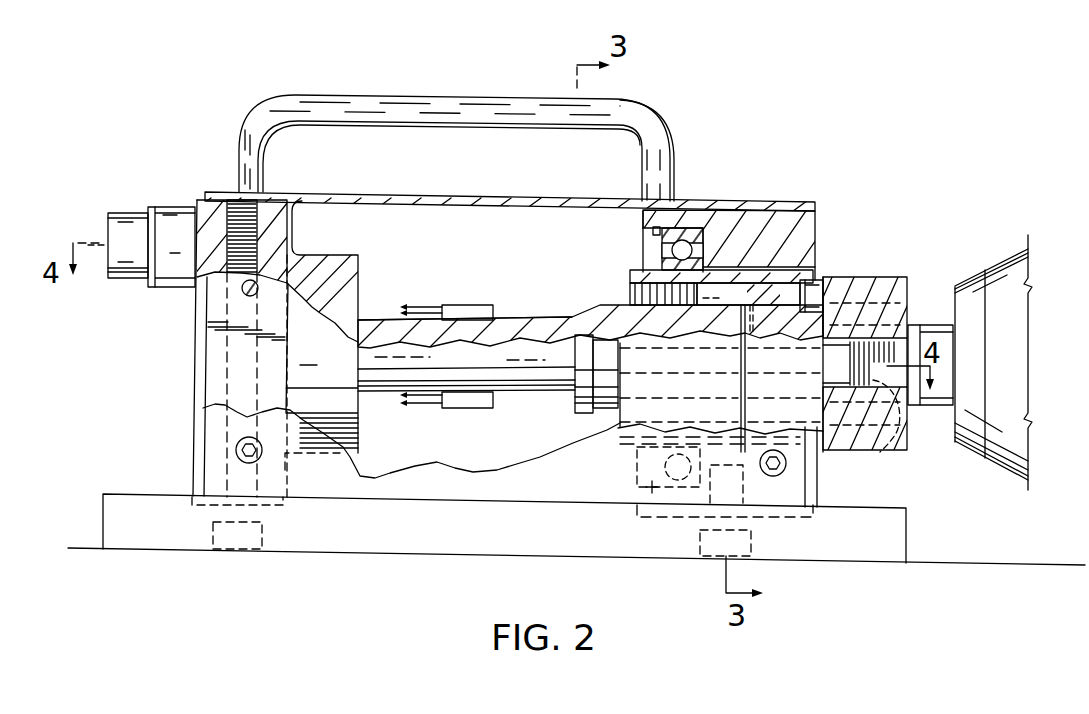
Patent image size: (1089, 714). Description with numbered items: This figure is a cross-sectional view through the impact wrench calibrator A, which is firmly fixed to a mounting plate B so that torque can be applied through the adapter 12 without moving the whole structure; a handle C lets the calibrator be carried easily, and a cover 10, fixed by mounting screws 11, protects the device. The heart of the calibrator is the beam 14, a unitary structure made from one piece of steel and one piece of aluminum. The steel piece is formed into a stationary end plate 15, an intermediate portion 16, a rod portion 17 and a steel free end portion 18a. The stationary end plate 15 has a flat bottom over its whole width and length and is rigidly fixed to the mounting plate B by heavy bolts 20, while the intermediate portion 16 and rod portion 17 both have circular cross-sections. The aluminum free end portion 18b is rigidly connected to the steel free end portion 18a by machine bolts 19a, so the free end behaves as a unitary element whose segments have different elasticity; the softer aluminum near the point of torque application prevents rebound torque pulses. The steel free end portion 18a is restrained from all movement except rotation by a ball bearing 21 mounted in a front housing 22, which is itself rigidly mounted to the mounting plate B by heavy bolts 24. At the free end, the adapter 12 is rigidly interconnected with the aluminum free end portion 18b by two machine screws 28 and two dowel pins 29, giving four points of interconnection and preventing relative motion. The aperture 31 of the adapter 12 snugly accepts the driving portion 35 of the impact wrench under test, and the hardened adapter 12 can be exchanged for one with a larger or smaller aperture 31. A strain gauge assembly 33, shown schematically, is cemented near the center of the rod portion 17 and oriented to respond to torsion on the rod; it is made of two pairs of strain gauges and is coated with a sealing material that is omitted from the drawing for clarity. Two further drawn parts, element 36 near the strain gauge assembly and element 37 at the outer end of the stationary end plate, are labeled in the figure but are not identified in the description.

The cover 10 is at (793, 205).
The mounting screws 11 is at (244, 290).
The adapter 12 is at (882, 277).
The beam 14 is at (378, 312).
The stationary end plate 15 is at (296, 201).
The intermediate portion 16 is at (342, 255).
The rod portion 17 is at (513, 318).
The steel free end portion 18a is at (630, 270).
The aluminum free end portion 18b is at (787, 275).
The machine bolts 19a is at (630, 292).
The heavy bolts 20 is at (232, 228).
The ball bearing 21 is at (688, 240).
The front housing 22 is at (790, 206).
The heavy bolts 24 is at (752, 545).
The machine screws 28 is at (908, 300).
The dowel pins 29 is at (887, 452).
The aperture 31 is at (882, 380).
The strain gauge assembly 33 is at (466, 305).
The driving portion 35 is at (930, 325).
The pins 36 is at (420, 305).
The end cap 37 is at (131, 213).
The impact wrench calibrator A is at (191, 380).
The mounting plate B is at (906, 550).
The handle C is at (466, 97).